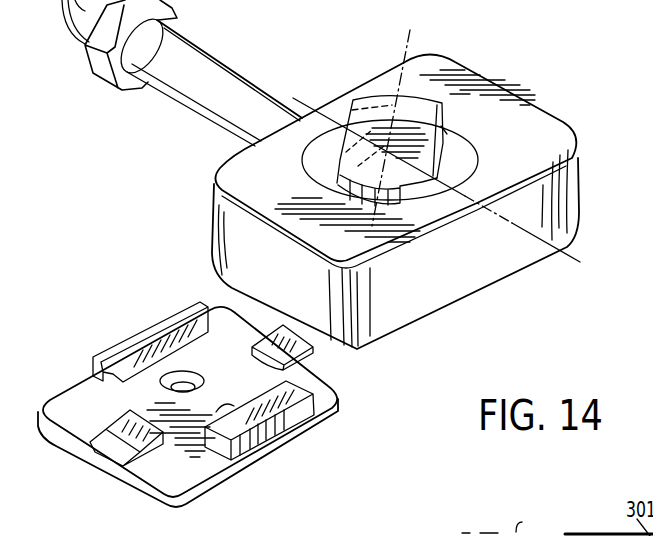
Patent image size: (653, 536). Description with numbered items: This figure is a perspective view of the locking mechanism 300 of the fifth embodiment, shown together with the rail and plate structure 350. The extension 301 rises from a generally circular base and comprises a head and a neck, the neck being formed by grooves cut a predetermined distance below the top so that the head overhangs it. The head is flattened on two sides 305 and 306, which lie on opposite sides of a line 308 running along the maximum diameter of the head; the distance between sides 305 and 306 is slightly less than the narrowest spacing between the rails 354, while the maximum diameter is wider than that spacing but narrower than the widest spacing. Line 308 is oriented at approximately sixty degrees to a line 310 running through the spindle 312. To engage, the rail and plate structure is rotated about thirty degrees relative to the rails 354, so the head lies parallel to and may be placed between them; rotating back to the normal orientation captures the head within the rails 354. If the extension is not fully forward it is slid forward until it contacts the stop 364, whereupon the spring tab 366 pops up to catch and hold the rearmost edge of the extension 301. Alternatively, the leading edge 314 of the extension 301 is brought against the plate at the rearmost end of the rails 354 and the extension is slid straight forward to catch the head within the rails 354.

The mounting body 300 is at (584, 358).
The extension 301 is at (407, 110).
The flattened side 305 is at (333, 161).
The flattened side 306 is at (447, 132).
The line 308 is at (410, 40).
The line 310 is at (577, 260).
The spindle 312 is at (200, 60).
The leading edge 314 is at (450, 93).
The mounting plate 350 is at (356, 352).
The rails 354 is at (138, 347).
The stop 364 is at (285, 335).
The spring tab 366 is at (133, 437).